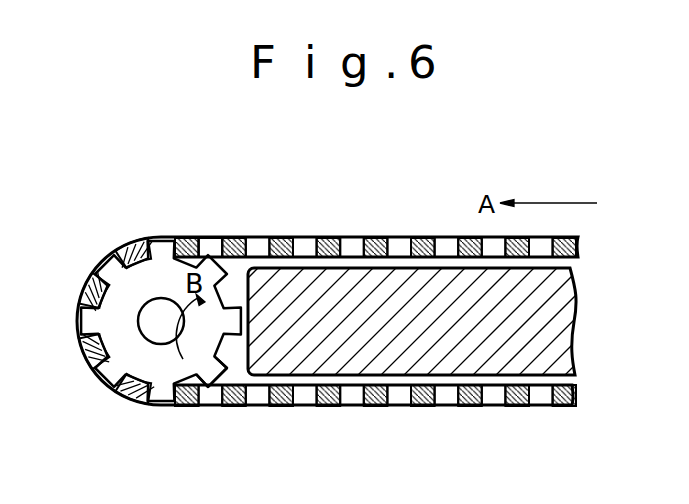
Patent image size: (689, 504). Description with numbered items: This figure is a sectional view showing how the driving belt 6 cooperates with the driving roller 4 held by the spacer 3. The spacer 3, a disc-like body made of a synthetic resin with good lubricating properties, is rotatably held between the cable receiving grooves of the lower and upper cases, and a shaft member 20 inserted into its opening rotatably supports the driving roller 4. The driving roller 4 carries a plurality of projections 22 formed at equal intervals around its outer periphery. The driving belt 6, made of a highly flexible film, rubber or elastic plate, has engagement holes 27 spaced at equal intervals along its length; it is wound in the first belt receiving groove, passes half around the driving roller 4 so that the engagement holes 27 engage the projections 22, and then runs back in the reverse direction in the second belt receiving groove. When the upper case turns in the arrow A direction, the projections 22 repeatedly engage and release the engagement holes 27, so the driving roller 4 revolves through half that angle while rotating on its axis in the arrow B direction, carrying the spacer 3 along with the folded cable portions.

The spacer 3 is at (452, 353).
The driving roller 4 is at (143, 362).
The driving belt 6 is at (376, 238).
The shaft member 20 is at (150, 326).
The projections 22 is at (213, 367).
The engagement holes 27 is at (212, 243).